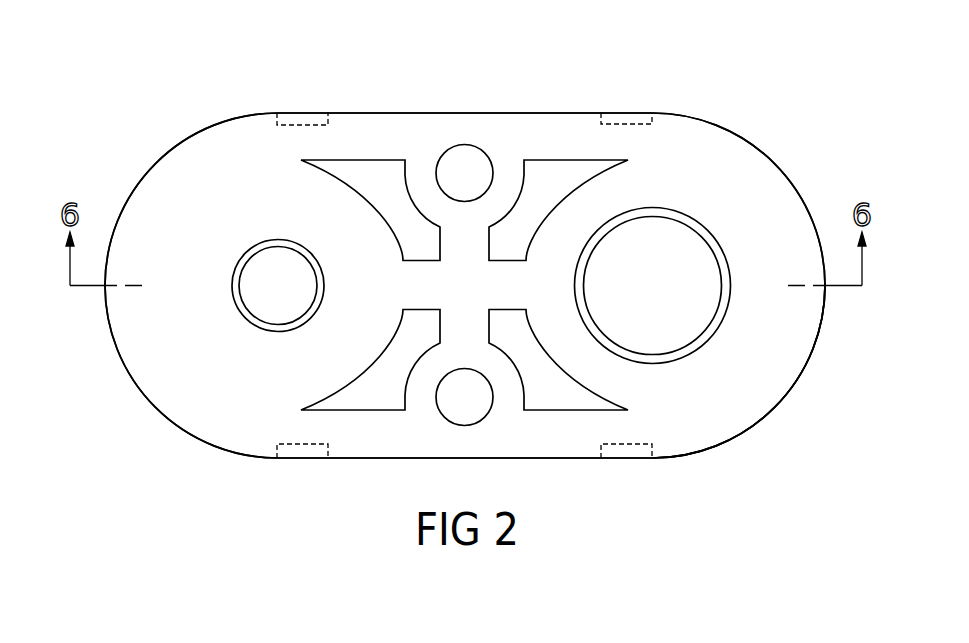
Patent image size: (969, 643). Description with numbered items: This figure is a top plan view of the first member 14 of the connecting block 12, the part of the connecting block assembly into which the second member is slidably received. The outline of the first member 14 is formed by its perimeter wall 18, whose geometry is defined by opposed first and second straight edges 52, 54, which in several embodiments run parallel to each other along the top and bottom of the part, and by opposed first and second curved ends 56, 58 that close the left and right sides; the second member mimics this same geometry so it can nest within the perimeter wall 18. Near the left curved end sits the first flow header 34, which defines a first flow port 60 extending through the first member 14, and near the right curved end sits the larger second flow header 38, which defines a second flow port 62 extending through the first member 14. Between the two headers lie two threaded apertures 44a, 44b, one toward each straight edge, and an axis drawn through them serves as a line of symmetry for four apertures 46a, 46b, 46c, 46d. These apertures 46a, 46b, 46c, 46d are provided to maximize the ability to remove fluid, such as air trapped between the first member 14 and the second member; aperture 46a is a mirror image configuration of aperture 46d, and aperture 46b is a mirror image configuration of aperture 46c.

The connecting block 12 is at (788, 156).
The first member 14 is at (773, 427).
The perimeter wall 18 is at (207, 447).
The first flow header 34 is at (260, 333).
The second flow header 38 is at (722, 258).
The threaded aperture 44a is at (467, 163).
The threaded aperture 44b is at (460, 407).
The aperture 46a is at (542, 172).
The aperture 46b is at (562, 395).
The aperture 46c is at (373, 397).
The aperture 46d is at (383, 177).
The first straight edge 52 is at (517, 113).
The second straight edge 54 is at (562, 458).
The first curved end 56 is at (107, 328).
The second curved end 58 is at (820, 325).
The first flow port 60 is at (253, 297).
The second flow port 62 is at (648, 257).